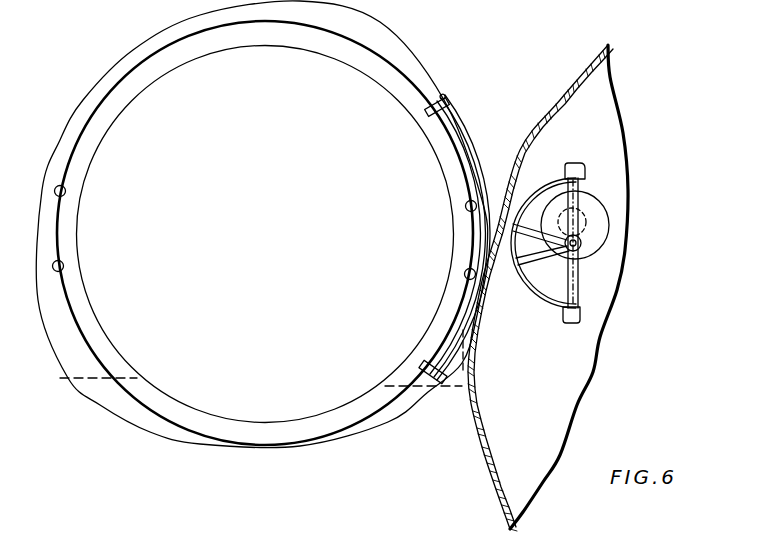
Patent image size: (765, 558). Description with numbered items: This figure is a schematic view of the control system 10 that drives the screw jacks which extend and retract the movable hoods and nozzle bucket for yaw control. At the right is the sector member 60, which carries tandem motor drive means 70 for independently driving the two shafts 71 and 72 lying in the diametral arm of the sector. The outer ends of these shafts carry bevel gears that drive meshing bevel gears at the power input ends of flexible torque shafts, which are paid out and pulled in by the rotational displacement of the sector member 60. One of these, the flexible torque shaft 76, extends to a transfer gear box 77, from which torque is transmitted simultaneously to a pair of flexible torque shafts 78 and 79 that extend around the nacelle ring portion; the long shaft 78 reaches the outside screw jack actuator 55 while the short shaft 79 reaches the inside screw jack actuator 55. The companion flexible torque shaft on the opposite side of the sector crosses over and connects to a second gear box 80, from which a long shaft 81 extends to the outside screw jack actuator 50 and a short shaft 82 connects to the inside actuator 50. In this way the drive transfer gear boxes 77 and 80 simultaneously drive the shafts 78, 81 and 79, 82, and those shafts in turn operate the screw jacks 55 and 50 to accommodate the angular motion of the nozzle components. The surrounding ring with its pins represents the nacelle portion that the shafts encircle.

The flexible sheet 10 is at (563, 84).
The screw jack actuator 50 is at (64, 265).
The screw jack actuator 55 is at (66, 192).
The sector member 60 is at (583, 273).
The tandem motor drive means 70 is at (607, 213).
The shaft 71 is at (590, 178).
The shaft 72 is at (580, 290).
The flexible torque shaft 76 is at (533, 308).
The transfer gear box 77 is at (443, 99).
The flexible torque shaft 78 is at (380, 53).
The flexible torque shaft 79 is at (455, 150).
The gear box 80 is at (428, 382).
The long shaft 81 is at (88, 348).
The short shaft 82 is at (452, 329).